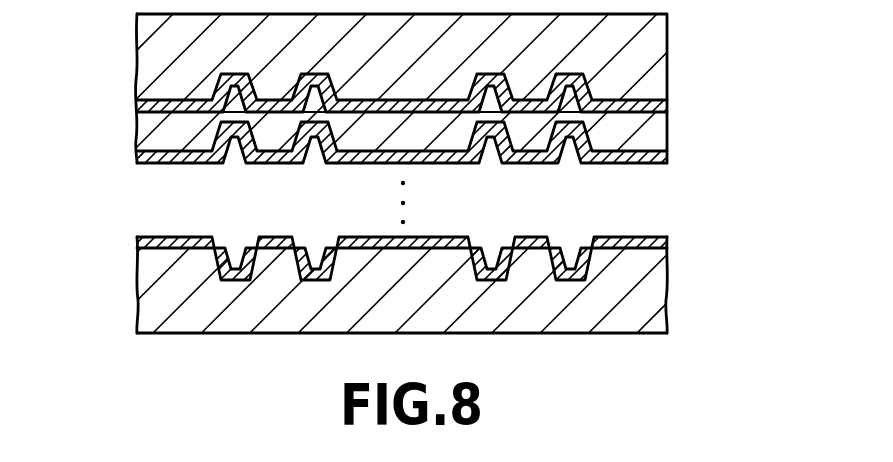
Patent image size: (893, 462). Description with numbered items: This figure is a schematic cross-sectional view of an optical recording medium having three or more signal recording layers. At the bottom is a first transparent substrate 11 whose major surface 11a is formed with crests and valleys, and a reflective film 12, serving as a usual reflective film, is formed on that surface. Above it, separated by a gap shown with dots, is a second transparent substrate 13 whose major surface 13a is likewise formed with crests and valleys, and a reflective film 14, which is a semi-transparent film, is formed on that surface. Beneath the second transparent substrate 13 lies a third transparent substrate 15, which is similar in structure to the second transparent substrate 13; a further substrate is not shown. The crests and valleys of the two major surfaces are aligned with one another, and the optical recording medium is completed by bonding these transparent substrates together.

The first transparent substrate 11 is at (633, 288).
The major surface 11a is at (640, 238).
The reflective film 12 is at (446, 200).
The second transparent substrate 13 is at (642, 40).
The major surface 13a is at (640, 122).
The reflective film 14 is at (446, 177).
The third transparent substrate 15 is at (633, 142).